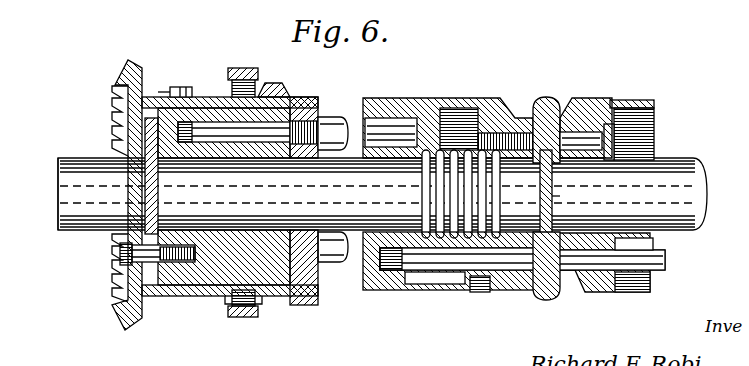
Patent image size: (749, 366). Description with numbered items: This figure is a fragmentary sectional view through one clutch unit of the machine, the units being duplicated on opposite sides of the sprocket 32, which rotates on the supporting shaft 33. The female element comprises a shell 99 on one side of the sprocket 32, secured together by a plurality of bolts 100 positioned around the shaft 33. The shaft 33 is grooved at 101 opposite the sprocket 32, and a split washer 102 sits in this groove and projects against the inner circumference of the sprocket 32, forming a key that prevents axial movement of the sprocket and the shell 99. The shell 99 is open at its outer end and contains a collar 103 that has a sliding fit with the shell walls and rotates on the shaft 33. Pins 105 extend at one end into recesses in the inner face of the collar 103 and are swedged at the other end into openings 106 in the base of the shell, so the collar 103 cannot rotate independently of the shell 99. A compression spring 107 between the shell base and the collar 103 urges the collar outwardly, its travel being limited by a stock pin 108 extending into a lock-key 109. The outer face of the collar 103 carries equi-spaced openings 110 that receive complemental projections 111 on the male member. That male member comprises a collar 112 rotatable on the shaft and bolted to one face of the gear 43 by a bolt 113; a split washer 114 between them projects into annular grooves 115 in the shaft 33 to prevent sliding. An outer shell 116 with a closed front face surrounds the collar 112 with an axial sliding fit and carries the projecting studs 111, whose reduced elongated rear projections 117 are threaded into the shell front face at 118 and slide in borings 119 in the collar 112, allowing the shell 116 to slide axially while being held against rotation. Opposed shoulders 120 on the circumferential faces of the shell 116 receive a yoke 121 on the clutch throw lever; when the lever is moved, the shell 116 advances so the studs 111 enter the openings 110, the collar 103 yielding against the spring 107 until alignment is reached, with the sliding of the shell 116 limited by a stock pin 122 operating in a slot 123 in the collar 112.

The sprocket 32 is at (545, 100).
The supporting shaft 33 is at (690, 188).
The gear 43 is at (128, 302).
The shell 99 is at (448, 108).
The bolts 100 is at (568, 135).
The groove 101 is at (553, 197).
The split washer 102 is at (545, 168).
The collar 103 is at (372, 268).
The pins 105 is at (470, 140).
The openings 106 is at (540, 296).
The compression spring 107 is at (406, 188).
The stock pin 108 is at (474, 292).
The lock-key 109 is at (400, 292).
The openings 110 is at (390, 128).
The projecting studs 111 is at (330, 125).
The collar 112 is at (292, 272).
The bolt 113 is at (118, 254).
The split washer 114 is at (120, 138).
The annular grooves 115 is at (140, 185).
The outer shell 116 is at (186, 284).
The rear projections 117 is at (180, 133).
The threaded portion 118 is at (300, 125).
The borings 119 is at (268, 125).
The opposed shoulders 120 is at (232, 300).
The yoke 121 is at (243, 70).
The stock pin 122 is at (168, 92).
The slot 123 is at (198, 100).